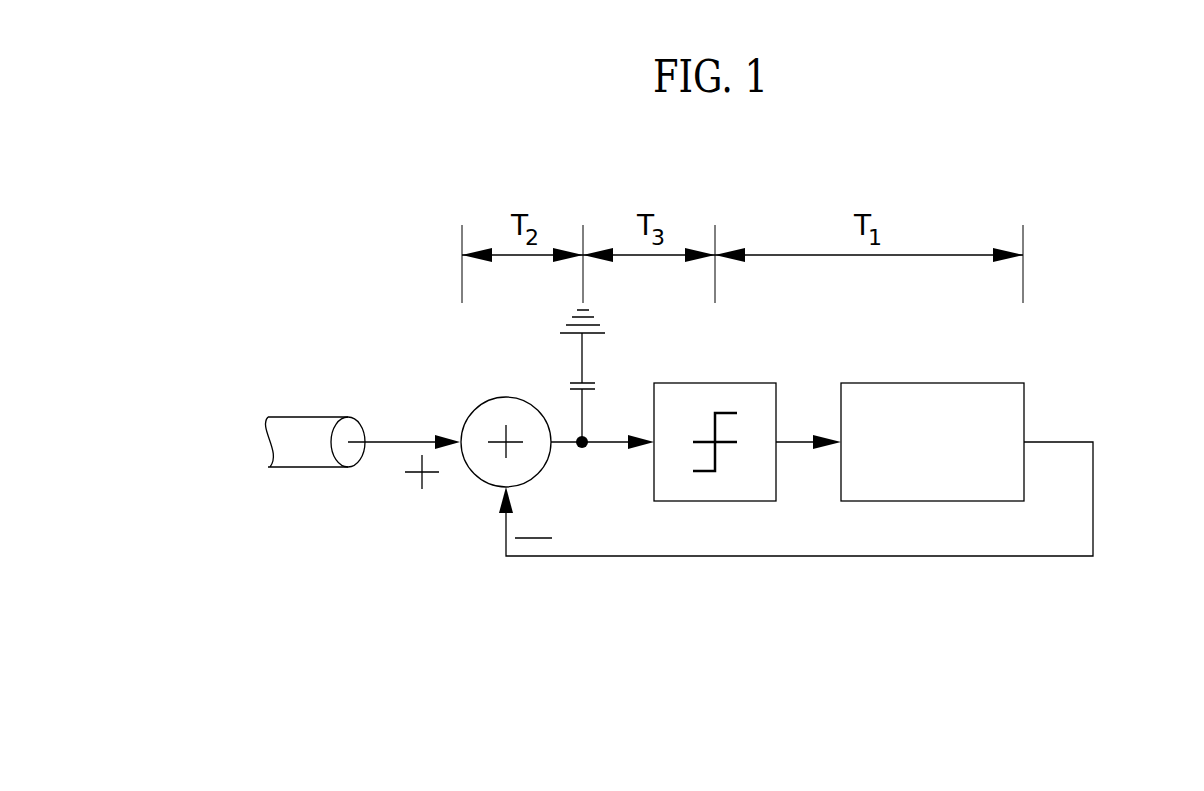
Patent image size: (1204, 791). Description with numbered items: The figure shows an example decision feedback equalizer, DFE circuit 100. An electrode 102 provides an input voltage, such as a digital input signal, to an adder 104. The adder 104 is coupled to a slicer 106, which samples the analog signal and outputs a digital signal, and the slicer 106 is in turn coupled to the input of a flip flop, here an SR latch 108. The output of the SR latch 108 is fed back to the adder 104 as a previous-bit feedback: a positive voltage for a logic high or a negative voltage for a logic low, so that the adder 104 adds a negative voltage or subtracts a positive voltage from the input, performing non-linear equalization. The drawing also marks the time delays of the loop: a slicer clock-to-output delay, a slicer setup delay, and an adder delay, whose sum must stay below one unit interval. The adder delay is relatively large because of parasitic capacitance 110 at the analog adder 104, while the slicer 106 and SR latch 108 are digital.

The DFE circuit 100 is at (1095, 155).
The electrode 102 is at (308, 417).
The adder 104 is at (505, 397).
The slicer 106 is at (753, 383).
The SR latch 108 is at (930, 383).
The parasitic capacitance 110 is at (590, 381).